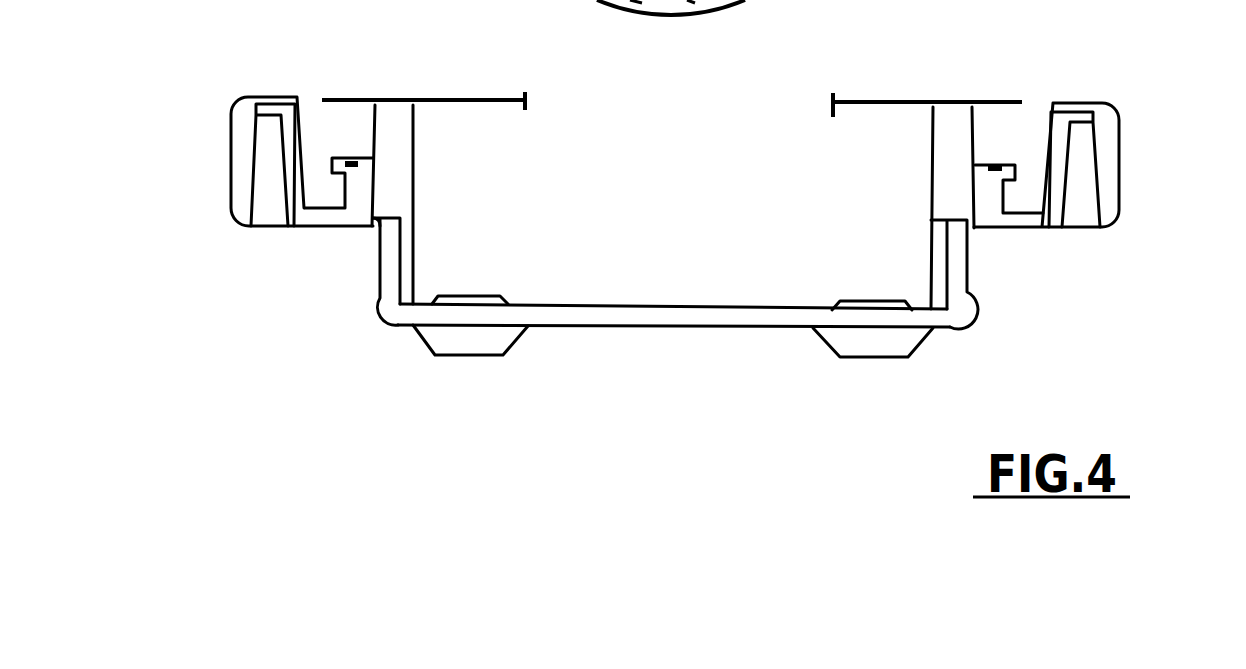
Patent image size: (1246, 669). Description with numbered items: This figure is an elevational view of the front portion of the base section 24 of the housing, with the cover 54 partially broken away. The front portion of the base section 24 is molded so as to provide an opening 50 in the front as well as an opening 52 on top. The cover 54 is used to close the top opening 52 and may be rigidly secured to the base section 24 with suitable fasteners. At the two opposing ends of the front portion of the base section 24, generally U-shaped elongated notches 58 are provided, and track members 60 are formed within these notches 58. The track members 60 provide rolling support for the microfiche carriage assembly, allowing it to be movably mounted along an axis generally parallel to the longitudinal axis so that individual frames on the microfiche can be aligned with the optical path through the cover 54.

The base section 24 is at (962, 318).
The opening 50 is at (672, 202).
The opening 52 is at (642, 157).
The cover 54 is at (885, 100).
The notches 58 is at (322, 138).
The track members 60 is at (352, 162).